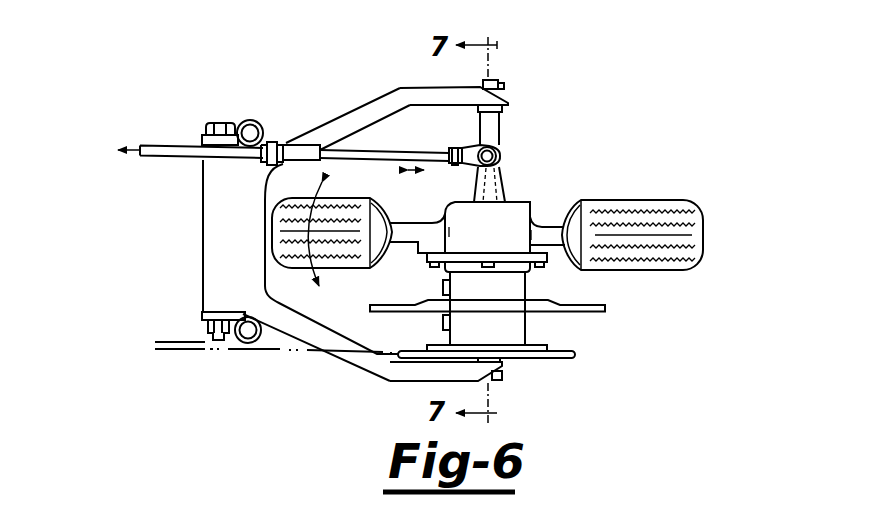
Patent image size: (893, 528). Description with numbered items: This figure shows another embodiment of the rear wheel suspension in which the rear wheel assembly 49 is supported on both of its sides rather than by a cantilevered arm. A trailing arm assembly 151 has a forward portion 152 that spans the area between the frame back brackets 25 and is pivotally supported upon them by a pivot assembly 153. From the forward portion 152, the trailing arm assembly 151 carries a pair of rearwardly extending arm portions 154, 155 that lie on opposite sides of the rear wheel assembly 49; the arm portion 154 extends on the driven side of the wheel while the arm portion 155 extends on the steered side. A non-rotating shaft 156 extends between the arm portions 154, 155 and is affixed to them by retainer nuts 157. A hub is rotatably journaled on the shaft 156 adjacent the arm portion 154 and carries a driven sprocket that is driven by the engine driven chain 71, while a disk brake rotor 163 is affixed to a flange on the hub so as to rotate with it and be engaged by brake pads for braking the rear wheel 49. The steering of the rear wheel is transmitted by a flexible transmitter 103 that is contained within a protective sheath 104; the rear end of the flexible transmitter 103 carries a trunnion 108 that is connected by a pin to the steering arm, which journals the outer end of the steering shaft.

The frame back brackets 25 is at (201, 137).
The rear wheel assembly 49 is at (646, 197).
The driving chain 71 is at (180, 352).
The flexible transmitter 103 is at (413, 152).
The protective sheath 104 is at (165, 146).
The trunnion 108 is at (478, 145).
The trailing arm assembly 151 is at (283, 334).
The forward portion 152 is at (212, 263).
The pivot assembly 153 is at (227, 126).
The arm portion 154 is at (375, 366).
The arm portion 155 is at (340, 127).
The non-rotating shaft 156 is at (503, 127).
The retainer nuts 157 is at (508, 99).
The disk brake rotor 163 is at (600, 308).